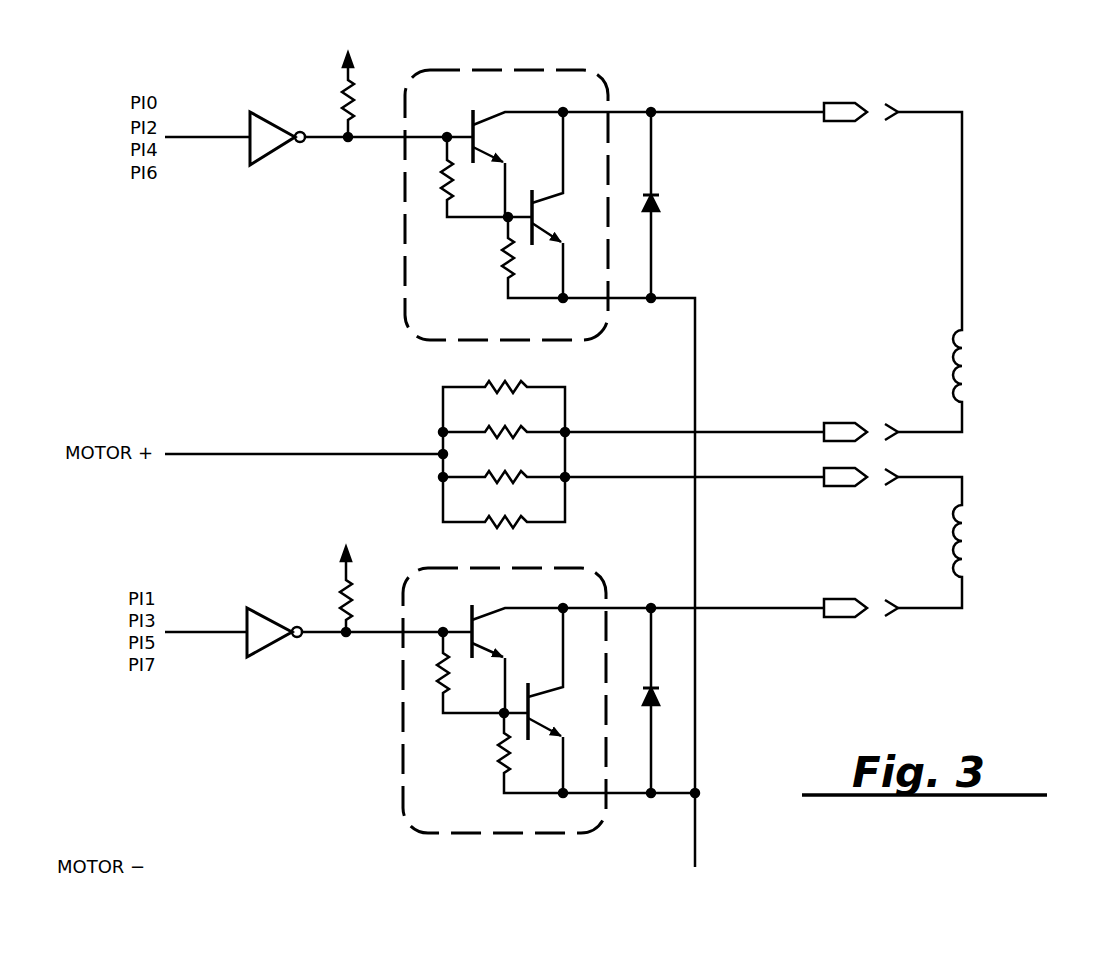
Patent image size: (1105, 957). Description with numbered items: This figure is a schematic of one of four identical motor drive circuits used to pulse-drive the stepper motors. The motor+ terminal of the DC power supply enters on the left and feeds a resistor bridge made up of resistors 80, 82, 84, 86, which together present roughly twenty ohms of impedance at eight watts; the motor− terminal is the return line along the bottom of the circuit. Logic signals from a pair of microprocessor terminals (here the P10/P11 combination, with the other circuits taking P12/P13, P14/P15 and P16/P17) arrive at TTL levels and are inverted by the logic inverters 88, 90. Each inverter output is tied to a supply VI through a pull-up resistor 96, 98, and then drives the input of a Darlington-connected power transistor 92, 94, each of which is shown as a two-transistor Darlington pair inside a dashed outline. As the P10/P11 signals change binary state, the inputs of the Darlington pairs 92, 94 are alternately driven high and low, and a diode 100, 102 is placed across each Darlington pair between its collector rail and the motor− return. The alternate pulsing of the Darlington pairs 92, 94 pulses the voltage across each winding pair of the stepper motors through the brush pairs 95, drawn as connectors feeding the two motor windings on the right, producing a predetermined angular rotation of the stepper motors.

The resistor 80 is at (505, 385).
The resistor 82 is at (505, 430).
The resistor 84 is at (505, 475).
The resistor 86 is at (505, 520).
The logic inverter 88 is at (272, 112).
The logic inverter 90 is at (268, 608).
The Darlington-connected power transistor 92 is at (507, 70).
The Darlington-connected power transistor 94 is at (545, 568).
The brush pairs 95 is at (878, 108).
The pull-up resistor 96 is at (346, 98).
The pull-up resistor 98 is at (345, 595).
The diode 100 is at (659, 203).
The diode 102 is at (659, 697).